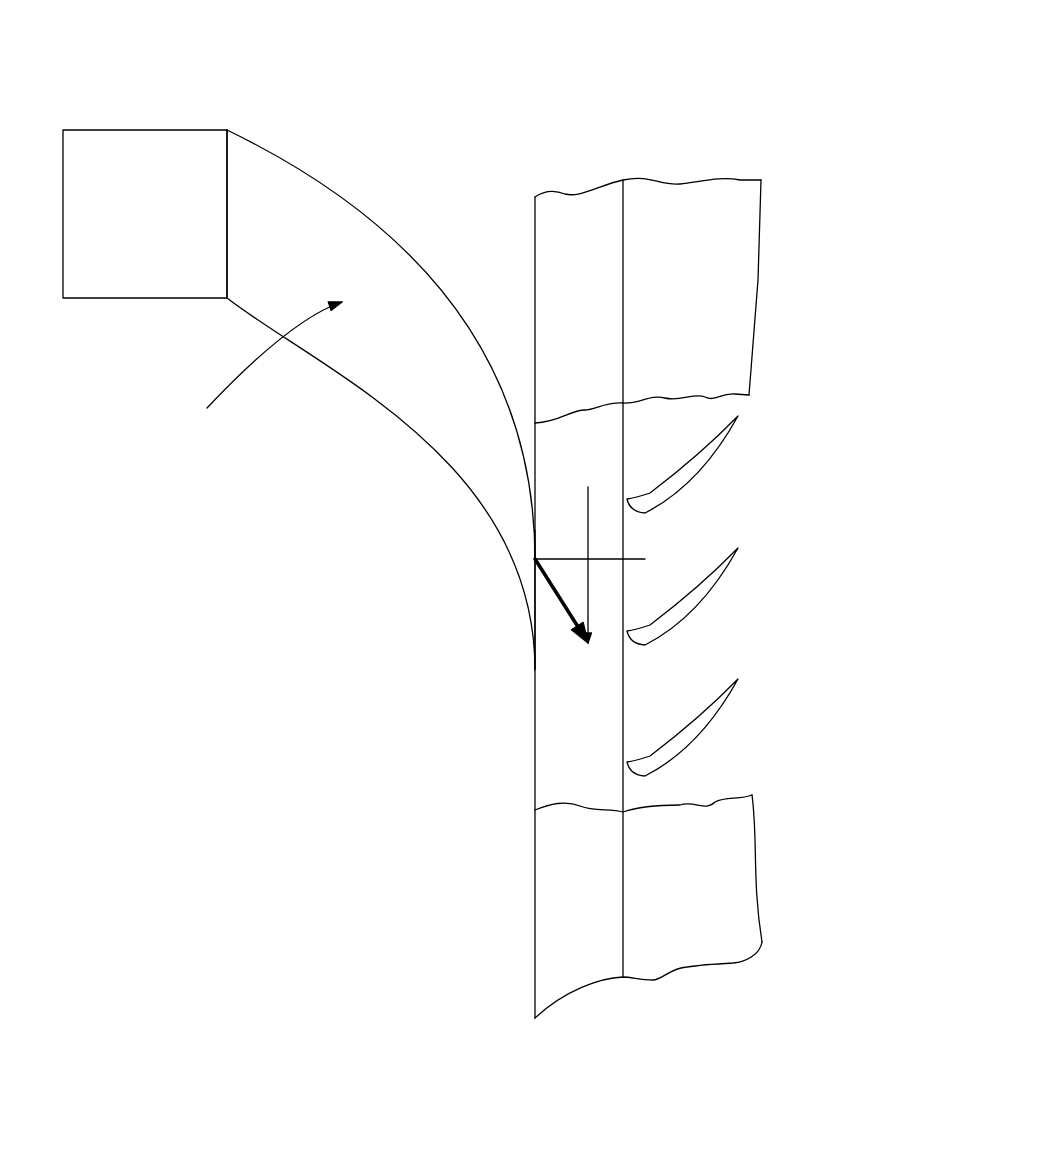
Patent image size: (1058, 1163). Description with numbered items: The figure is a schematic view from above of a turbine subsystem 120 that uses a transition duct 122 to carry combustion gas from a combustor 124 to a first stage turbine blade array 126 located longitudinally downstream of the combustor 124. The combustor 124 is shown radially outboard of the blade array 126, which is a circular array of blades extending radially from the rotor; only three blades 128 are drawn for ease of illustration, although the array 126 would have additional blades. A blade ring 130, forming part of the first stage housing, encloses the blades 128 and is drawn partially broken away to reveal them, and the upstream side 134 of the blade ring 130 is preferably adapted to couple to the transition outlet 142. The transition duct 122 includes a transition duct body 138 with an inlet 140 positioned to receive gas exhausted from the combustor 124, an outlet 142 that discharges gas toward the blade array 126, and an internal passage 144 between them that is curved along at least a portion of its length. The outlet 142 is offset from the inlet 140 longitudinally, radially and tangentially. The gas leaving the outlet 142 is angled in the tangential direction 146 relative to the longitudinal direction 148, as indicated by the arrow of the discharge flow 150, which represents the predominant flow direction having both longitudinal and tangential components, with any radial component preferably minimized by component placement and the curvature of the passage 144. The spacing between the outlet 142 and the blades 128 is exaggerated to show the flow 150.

The turbine subsystem 120 is at (477, 110).
The transition duct 122 is at (430, 277).
The combustor 124 is at (128, 130).
The first stage turbine blade array 126 is at (865, 538).
The blades 128 is at (727, 445).
The blade ring 130 is at (691, 207).
The upstream side 134 is at (535, 788).
The transition duct body 138 is at (365, 392).
The inlet 140 is at (227, 210).
The outlet 142 is at (535, 530).
The internal passage 144 is at (252, 369).
The tangential direction 146 is at (591, 548).
The longitudinal direction 148 is at (609, 561).
The discharge flow 150 is at (560, 602).